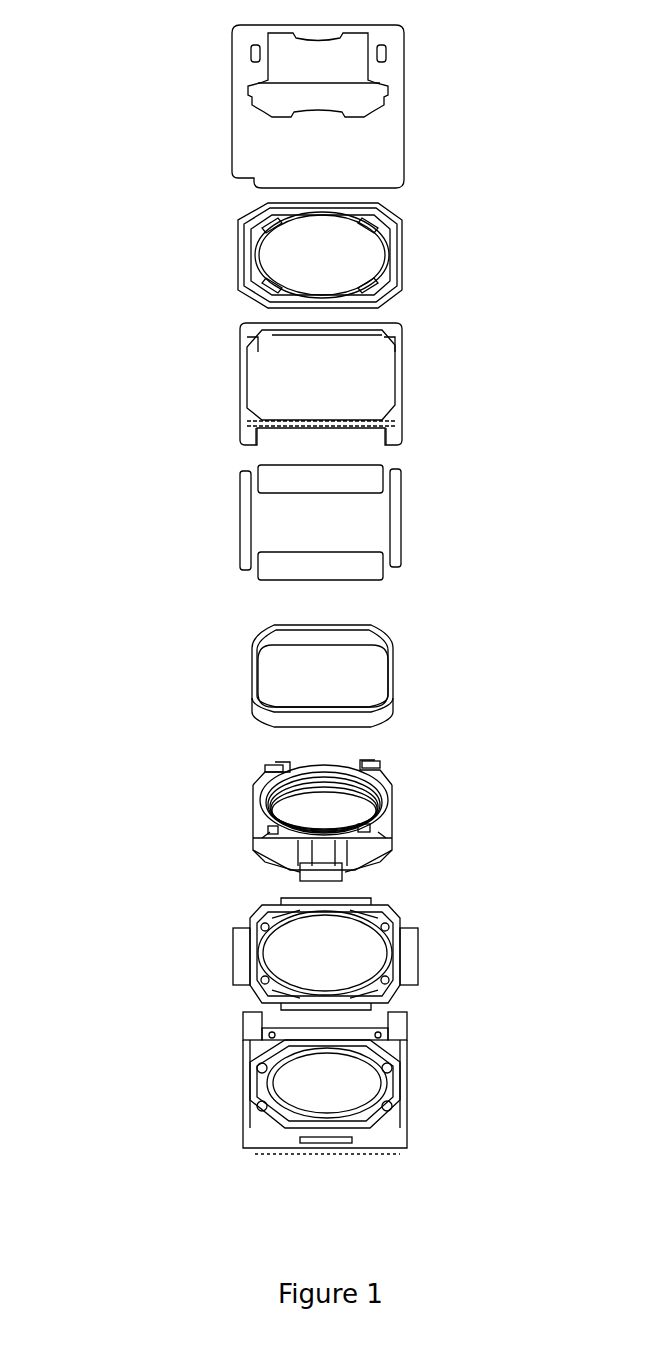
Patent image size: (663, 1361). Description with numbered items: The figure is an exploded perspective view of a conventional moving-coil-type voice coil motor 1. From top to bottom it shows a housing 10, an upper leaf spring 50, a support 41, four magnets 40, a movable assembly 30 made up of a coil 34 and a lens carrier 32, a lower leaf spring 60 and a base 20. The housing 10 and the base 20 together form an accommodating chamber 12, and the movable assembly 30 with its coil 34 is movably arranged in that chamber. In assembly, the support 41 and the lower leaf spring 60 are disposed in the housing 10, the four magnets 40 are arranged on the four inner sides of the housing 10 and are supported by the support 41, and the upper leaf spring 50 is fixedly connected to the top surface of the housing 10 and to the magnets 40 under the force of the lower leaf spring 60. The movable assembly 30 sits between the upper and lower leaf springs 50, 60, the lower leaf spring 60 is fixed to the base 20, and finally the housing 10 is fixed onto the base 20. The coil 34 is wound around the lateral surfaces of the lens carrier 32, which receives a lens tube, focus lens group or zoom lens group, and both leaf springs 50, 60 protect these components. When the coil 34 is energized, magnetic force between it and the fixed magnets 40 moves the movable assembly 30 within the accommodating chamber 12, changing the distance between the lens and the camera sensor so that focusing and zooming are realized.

The voice coil motor 1 is at (132, 73).
The housing 10 is at (401, 118).
The accommodating chamber 12 is at (352, 93).
The upper leaf spring 50 is at (398, 253).
The support 41 is at (398, 383).
The magnets 40 is at (397, 512).
The movable assembly 30 is at (530, 637).
The coil 34 is at (393, 668).
The lens carrier 32 is at (391, 820).
The lower leaf spring 60 is at (416, 960).
The base 20 is at (405, 1080).